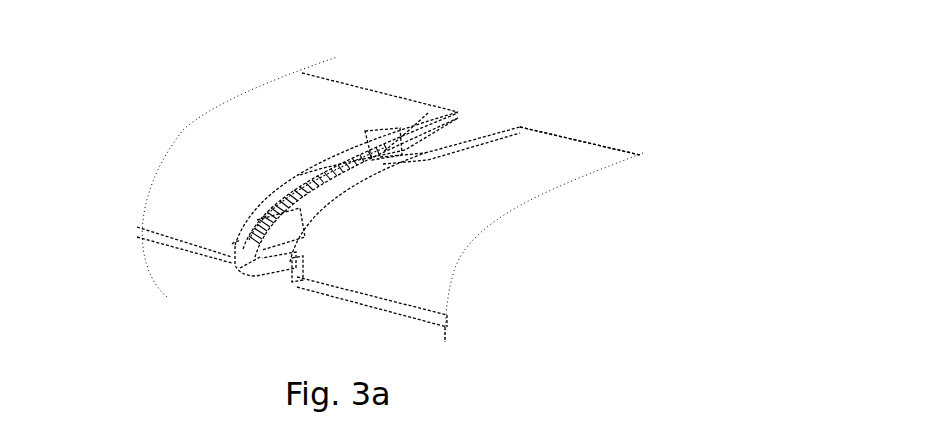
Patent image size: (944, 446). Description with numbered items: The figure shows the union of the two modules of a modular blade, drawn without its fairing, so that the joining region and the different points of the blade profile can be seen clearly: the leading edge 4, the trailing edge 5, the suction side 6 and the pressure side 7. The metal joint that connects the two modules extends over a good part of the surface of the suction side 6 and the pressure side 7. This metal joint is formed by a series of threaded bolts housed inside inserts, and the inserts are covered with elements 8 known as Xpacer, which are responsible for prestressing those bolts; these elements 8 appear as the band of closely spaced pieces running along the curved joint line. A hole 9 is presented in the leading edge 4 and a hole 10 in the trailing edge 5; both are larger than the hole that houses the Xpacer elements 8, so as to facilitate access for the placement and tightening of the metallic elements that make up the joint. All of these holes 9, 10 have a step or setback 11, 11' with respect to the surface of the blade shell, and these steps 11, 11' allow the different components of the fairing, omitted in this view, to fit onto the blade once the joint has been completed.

The leading edge 4 is at (182, 243).
The trailing edge 5 is at (572, 138).
The suction side 6 is at (442, 281).
The pressure side 7 is at (437, 343).
The Xpacer elements 8 is at (323, 167).
The hole in the leading edge 9 is at (260, 267).
The hole in the trailing edge 10 is at (470, 123).
The step or setback 11 is at (346, 144).
The step or setback 11' is at (237, 201).